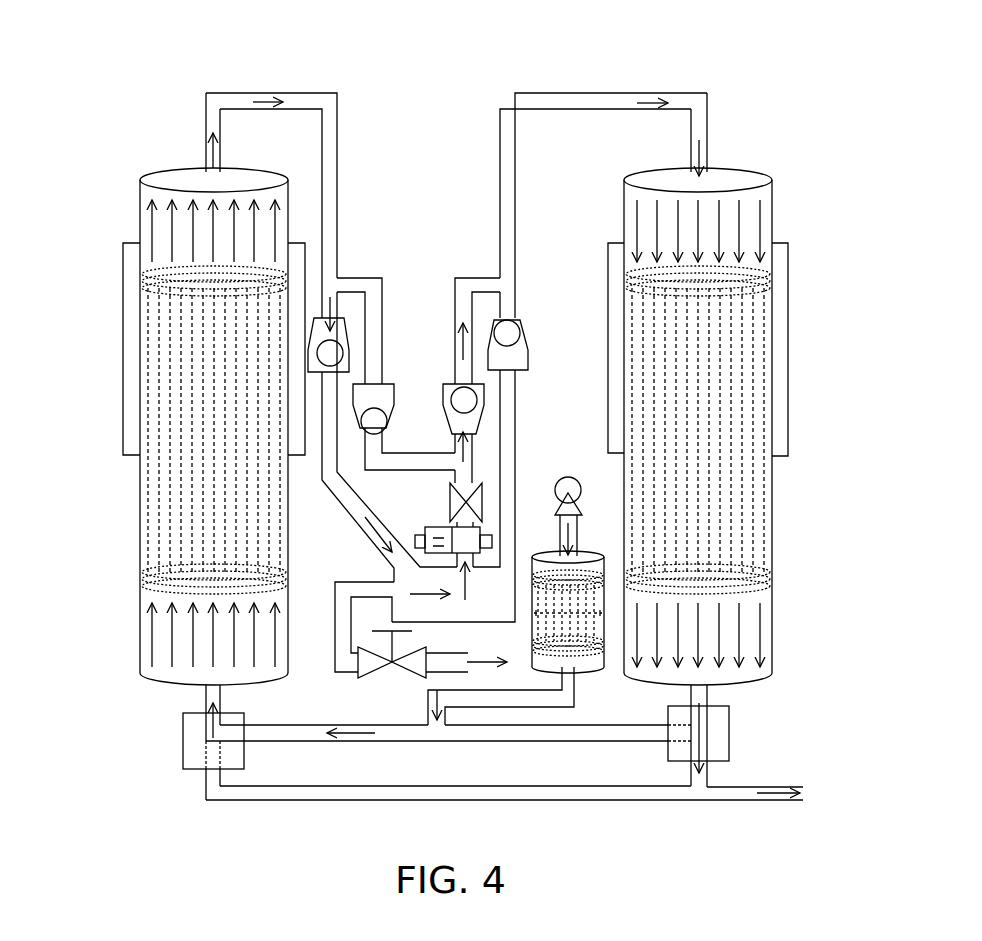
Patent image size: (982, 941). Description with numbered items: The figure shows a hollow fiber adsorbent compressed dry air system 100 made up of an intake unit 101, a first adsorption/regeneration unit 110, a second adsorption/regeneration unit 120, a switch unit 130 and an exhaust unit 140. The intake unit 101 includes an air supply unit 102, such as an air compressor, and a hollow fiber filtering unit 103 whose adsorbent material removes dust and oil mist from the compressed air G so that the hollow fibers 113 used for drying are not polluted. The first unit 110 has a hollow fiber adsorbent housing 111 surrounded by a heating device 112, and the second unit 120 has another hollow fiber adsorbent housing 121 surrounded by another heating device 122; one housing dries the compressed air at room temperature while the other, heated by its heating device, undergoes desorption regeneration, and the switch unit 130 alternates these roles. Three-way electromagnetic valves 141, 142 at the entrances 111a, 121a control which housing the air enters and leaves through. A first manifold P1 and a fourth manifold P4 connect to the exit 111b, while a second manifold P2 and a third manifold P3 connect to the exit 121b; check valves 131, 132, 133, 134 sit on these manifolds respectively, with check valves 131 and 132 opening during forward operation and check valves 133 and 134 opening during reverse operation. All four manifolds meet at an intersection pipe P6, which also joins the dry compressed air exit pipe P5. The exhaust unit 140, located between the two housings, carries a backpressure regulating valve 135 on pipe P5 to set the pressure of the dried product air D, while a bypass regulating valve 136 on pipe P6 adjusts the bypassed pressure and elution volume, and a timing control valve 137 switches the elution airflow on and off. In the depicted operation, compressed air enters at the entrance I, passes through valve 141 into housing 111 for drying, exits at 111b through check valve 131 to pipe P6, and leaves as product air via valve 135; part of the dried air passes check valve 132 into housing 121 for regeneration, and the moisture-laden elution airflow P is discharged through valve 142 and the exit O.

The hollow fiber adsorbent compressed dry air system 100 is at (95, 52).
The first adsorption/regeneration unit 110 is at (157, 155).
The hollow fiber adsorbent housing 111 is at (140, 206).
The entrance 111a is at (154, 689).
The exit 111b is at (208, 160).
The heating device 112 is at (123, 350).
The hollow fibers 113 is at (170, 524).
The second adsorption/regeneration unit 120 is at (760, 155).
The hollow fiber adsorbent housing 121 is at (772, 205).
The entrance 121a is at (727, 695).
The exit 121b is at (705, 158).
The heating device 122 is at (788, 347).
The switch unit 130 is at (420, 243).
The check valve 131 is at (315, 377).
The check valve 132 is at (445, 380).
The check valve 133 is at (522, 335).
The check valve 134 is at (387, 380).
The backpressure regulating valve 135 is at (375, 667).
The bypass regulating valve 136 is at (455, 510).
The timing control valve 137 is at (425, 532).
The exhaust unit 140 is at (322, 660).
The electromagnetic valve 141 is at (183, 742).
The electromagnetic valve 142 is at (729, 732).
The intake unit 101 is at (595, 443).
The air supply unit 102 is at (571, 479).
The hollow fiber filtering unit 103 is at (545, 552).
The compressed air G is at (262, 102).
The elution airflow P is at (652, 102).
The first manifold P1 is at (327, 462).
The second manifold P2 is at (462, 299).
The third manifold P3 is at (508, 388).
The fourth manifold P4 is at (376, 303).
The dry compressed air exit pipe P5 is at (336, 630).
The intersection pipe P6 is at (458, 598).
The dried product air D is at (466, 655).
The entrance I is at (436, 728).
The exit O is at (722, 798).